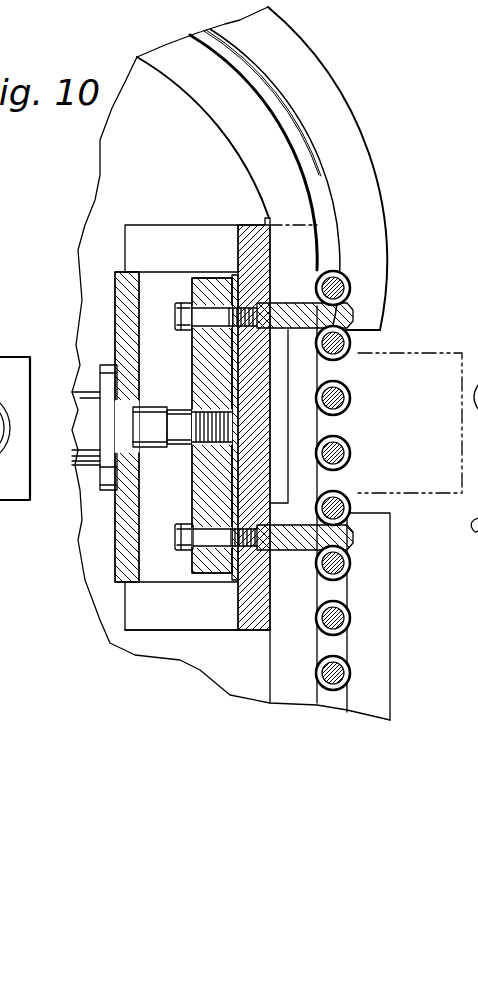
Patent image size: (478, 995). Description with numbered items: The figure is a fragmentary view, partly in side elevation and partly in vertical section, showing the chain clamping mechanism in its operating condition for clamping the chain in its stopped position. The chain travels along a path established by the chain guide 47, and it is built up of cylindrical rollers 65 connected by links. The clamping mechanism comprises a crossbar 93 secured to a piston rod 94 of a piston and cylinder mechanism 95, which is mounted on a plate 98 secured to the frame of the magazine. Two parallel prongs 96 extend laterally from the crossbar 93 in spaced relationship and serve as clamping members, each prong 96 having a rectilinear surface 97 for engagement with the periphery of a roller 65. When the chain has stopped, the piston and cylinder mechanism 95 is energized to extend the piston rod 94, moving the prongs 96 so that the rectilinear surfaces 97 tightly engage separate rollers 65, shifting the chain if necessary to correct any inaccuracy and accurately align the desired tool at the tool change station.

The chain guide 47 is at (224, 146).
The rollers 65 is at (350, 284).
The crossbar 93 is at (205, 366).
The piston rod 94 is at (154, 433).
The piston and cylinder mechanism 95 is at (73, 462).
The prongs 96 is at (290, 303).
The rectilinear surface 97 is at (352, 297).
The plate 98 is at (122, 313).